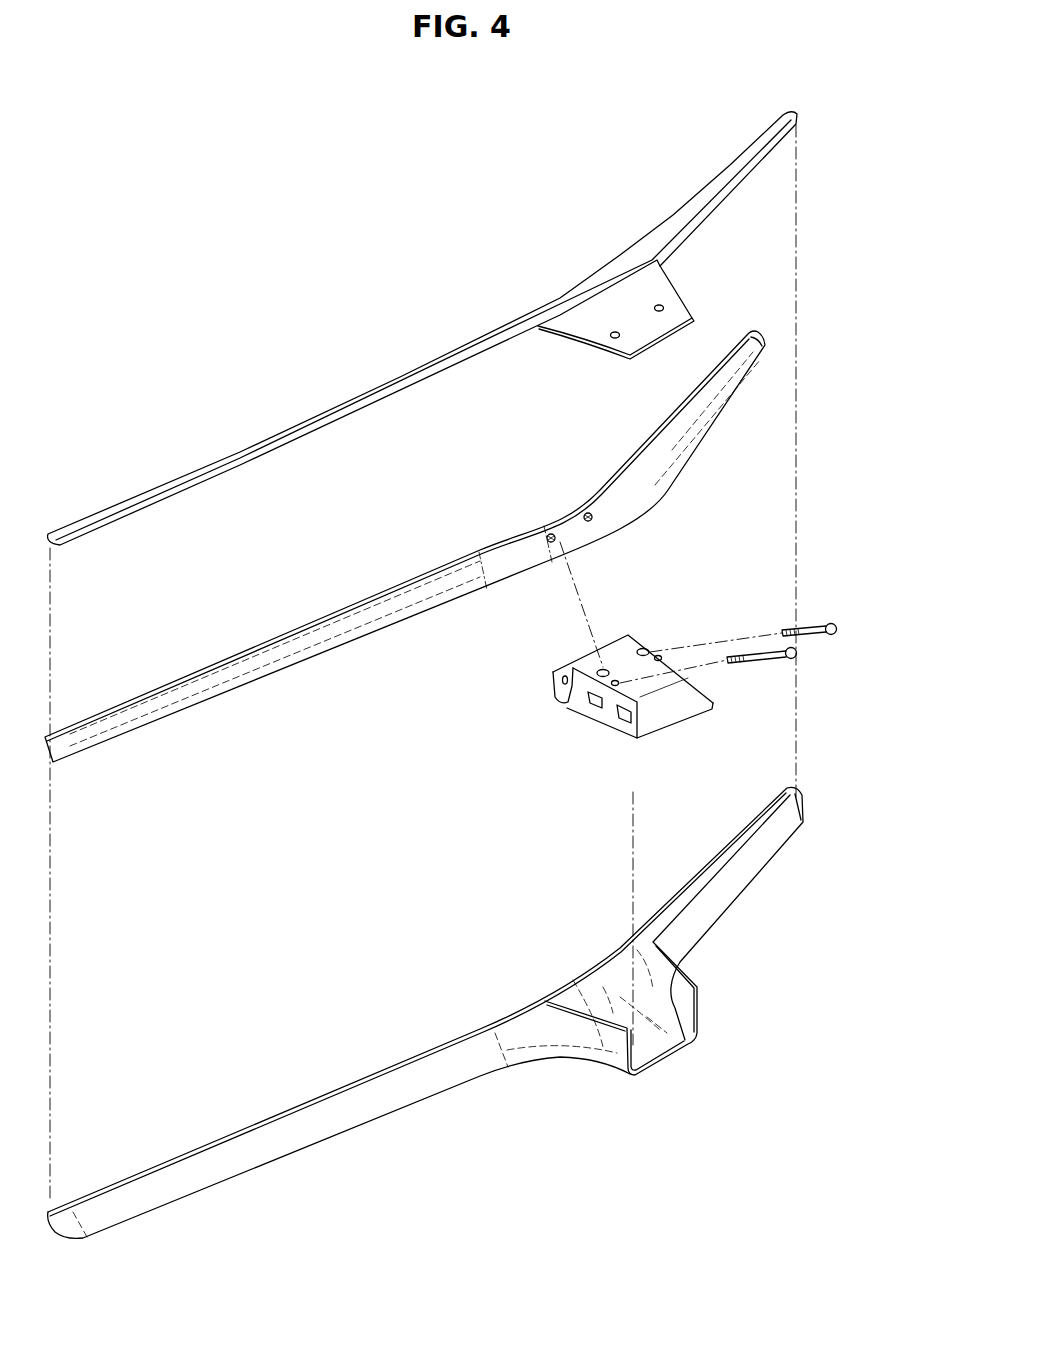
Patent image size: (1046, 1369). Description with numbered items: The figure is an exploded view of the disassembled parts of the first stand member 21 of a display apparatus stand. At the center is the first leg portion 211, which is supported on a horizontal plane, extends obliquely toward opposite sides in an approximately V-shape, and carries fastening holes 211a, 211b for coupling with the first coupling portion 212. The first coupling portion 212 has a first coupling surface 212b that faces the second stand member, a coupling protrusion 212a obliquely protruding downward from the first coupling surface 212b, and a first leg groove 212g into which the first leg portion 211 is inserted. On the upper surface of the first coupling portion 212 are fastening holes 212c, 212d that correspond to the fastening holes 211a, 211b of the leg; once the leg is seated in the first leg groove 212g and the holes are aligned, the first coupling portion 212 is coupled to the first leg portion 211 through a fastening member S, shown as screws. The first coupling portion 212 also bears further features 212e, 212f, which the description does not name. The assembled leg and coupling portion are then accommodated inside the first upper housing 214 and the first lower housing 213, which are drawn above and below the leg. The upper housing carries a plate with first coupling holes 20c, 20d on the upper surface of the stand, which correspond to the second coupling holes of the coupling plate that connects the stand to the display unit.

The first stand member 21 is at (244, 199).
The first upper housing 214 is at (355, 385).
The first coupling hole 20c is at (658, 305).
The first coupling hole 20d is at (612, 333).
The first leg portion 211 is at (381, 577).
The fastening hole 211a is at (591, 514).
The fastening hole 211b is at (551, 534).
The first coupling portion 212 is at (459, 753).
The coupling protrusion 212a is at (665, 722).
The first coupling surface 212b is at (670, 687).
The fastening hole 212c is at (643, 648).
The fastening hole 212d is at (600, 670).
The coupling hole 212e is at (621, 720).
The coupling hole 212f is at (595, 703).
The first leg groove 212g is at (560, 693).
The first lower housing 213 is at (376, 1056).
The fastening member S is at (832, 611).